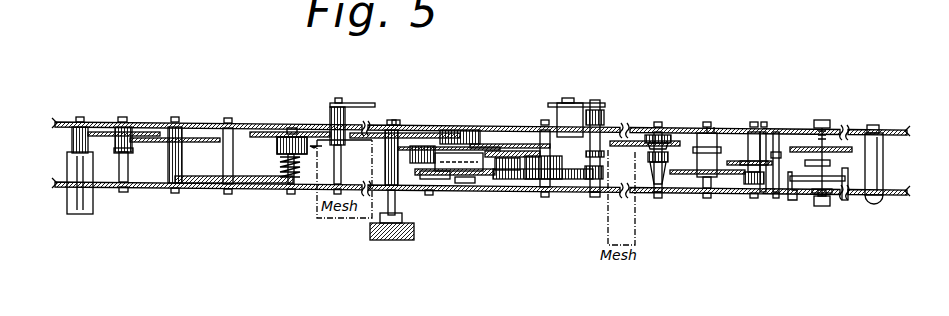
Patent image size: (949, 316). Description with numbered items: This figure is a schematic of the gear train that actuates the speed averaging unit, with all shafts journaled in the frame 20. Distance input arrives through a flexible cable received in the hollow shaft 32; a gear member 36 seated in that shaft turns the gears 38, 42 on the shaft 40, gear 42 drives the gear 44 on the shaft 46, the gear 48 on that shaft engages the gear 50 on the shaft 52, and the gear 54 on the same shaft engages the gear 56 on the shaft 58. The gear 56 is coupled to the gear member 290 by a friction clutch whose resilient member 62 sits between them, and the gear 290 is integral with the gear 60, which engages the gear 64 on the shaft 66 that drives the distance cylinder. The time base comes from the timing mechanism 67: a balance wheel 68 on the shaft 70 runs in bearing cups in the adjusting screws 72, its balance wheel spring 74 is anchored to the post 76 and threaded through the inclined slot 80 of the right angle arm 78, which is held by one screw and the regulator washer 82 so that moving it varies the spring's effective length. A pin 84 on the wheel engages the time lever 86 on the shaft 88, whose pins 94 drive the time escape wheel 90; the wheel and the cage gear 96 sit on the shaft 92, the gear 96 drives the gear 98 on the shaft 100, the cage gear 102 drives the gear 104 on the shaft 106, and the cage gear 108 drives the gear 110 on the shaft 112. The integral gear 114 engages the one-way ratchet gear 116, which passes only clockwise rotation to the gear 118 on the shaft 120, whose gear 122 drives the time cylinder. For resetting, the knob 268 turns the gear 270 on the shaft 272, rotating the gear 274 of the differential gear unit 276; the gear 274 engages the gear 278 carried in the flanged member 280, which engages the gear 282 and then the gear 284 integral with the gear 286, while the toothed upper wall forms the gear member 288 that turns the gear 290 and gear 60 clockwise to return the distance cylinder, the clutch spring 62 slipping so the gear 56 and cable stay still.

The frame 20 is at (70, 121).
The hollow shaft 32 is at (67, 205).
The gear member 36 is at (71, 140).
The gear 38 is at (102, 129).
The shaft 40 is at (134, 161).
The gear 42 is at (133, 150).
The gear 44 is at (194, 138).
The shaft 46 is at (178, 190).
The gear 48 is at (168, 169).
The gear 50 is at (190, 176).
The shaft 52 is at (230, 128).
The gear 54 is at (238, 192).
The gear 56 is at (278, 189).
The shaft 58 is at (292, 128).
The gear 60 is at (262, 132).
The resilient member 62 is at (300, 175).
The gear 64 is at (328, 116).
The shaft 66 is at (340, 103).
The timing mechanism 67 is at (888, 126).
The balance wheel 68 is at (872, 130).
The shaft 70 is at (832, 163).
The adjusting screws 72 is at (828, 120).
The balance wheel spring 74 is at (846, 194).
The post 76 is at (790, 190).
The right angle arm 78 is at (860, 202).
The inclined slot 80 is at (848, 178).
The regulator washer 82 is at (826, 208).
The pin 84 is at (822, 120).
The time lever 86 is at (800, 147).
The shaft 88 is at (776, 140).
The time escape wheel 90 is at (742, 150).
The shaft 92 is at (762, 128).
The pins 94 is at (776, 186).
The cage gear 96 is at (752, 178).
The gear 98 is at (660, 186).
The shaft 100 is at (708, 190).
The cage gear 102 is at (708, 134).
The gear 104 is at (630, 140).
The shaft 106 is at (660, 132).
The cage gear 108 is at (652, 196).
The gear 110 is at (512, 144).
The shaft 112 is at (544, 120).
The gear 114 is at (516, 170).
The one-way ratchet gear 116 is at (556, 178).
The gear 118 is at (598, 188).
The shaft 120 is at (596, 180).
The gear 122 is at (604, 116).
The knob 268 is at (368, 236).
The gear 270 is at (390, 152).
The shaft 272 is at (400, 128).
The gear 274 is at (455, 128).
The differential gear unit 276 is at (472, 132).
The gear 278 is at (426, 150).
The flanged member 280 is at (491, 150).
The gear 282 is at (430, 188).
The gear 284 is at (482, 176).
The gear 286 is at (470, 188).
The gear member 288 is at (424, 145).
The gear member 290 is at (280, 146).